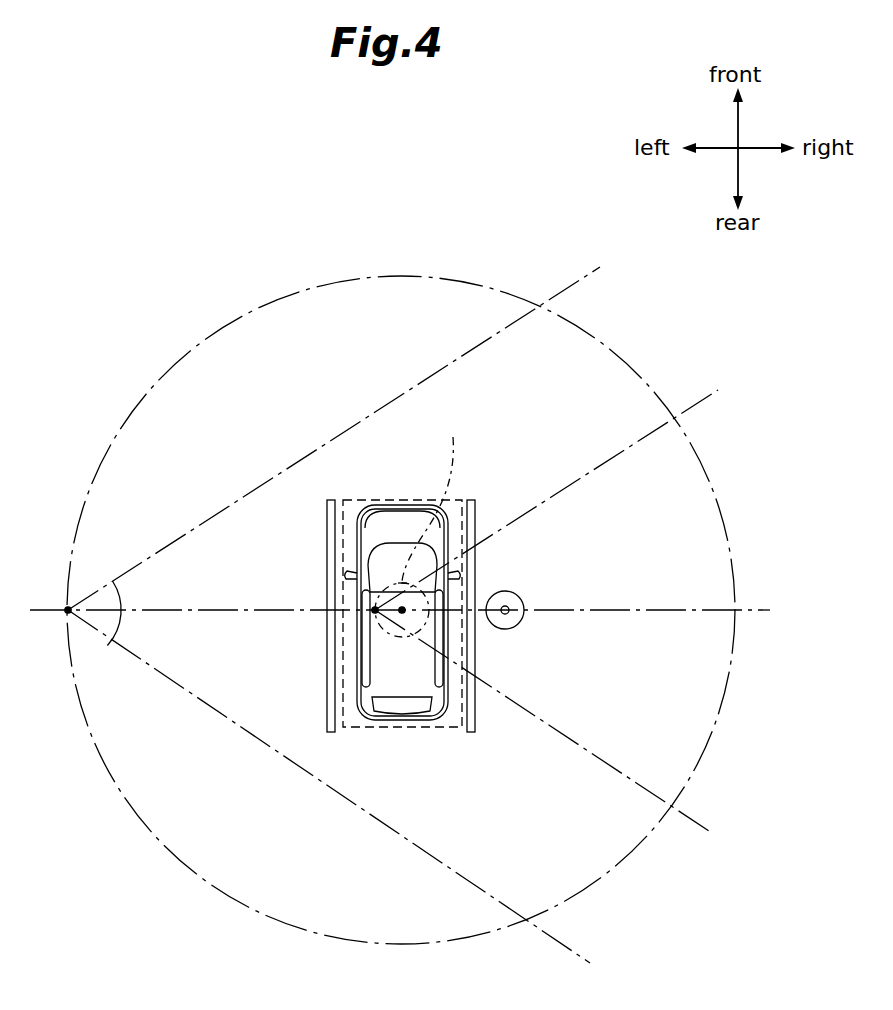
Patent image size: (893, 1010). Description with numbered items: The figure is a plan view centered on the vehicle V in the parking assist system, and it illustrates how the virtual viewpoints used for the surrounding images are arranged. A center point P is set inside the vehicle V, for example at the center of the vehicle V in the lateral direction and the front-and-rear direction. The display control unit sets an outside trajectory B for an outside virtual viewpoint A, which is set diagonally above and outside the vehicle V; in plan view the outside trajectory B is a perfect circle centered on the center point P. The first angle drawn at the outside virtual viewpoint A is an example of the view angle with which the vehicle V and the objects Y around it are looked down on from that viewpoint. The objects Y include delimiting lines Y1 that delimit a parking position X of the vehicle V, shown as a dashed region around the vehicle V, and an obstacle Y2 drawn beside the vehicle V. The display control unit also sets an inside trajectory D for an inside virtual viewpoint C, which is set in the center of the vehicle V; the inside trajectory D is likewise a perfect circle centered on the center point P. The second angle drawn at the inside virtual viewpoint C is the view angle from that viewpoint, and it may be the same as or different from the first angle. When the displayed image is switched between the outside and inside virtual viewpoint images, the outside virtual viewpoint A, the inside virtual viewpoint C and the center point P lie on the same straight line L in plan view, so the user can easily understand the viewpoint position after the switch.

The outside virtual viewpoint A is at (67, 607).
The outside trajectory B is at (213, 333).
The inside virtual viewpoint C is at (374, 609).
The inside trajectory D is at (431, 496).
The straight line L is at (265, 612).
The center point P is at (404, 609).
The vehicle V is at (452, 512).
The parking position X is at (397, 500).
The objects Y is at (461, 666).
The delimiting lines Y1 is at (332, 733).
The obstacle Y2 is at (518, 625).